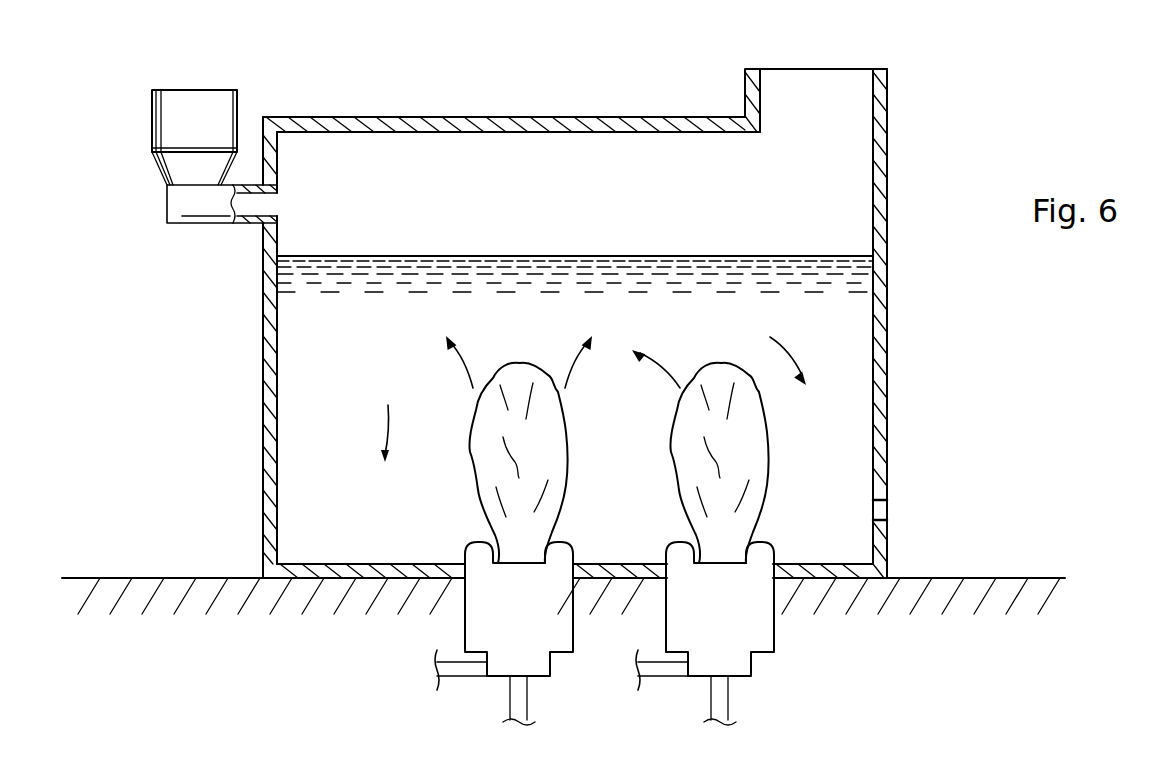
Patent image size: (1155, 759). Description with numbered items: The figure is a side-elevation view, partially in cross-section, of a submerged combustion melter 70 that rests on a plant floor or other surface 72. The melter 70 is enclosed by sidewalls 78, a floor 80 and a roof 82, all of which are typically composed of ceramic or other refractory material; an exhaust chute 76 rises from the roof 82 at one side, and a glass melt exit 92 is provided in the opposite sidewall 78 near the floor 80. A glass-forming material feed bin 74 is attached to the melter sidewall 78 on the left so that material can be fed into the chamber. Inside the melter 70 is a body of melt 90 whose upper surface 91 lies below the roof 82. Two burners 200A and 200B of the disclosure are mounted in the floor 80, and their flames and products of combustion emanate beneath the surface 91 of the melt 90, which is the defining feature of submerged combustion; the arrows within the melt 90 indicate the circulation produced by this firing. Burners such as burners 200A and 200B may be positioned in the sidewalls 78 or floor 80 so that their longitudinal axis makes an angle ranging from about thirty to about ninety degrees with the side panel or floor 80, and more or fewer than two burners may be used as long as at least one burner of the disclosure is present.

The submerged combustion melter 70 is at (912, 65).
The plant floor or other surface 72 is at (282, 600).
The glass-forming material feed bin 74 is at (150, 120).
The exhaust chute 76 is at (745, 92).
The sidewalls 78 is at (263, 412).
The floor 80 is at (383, 572).
The roof 82 is at (472, 116).
The melt 90 is at (361, 361).
The surface of melt 91 is at (740, 256).
The glass melt exit 92 is at (880, 508).
The burner 200A is at (550, 628).
The burner 200B is at (752, 628).